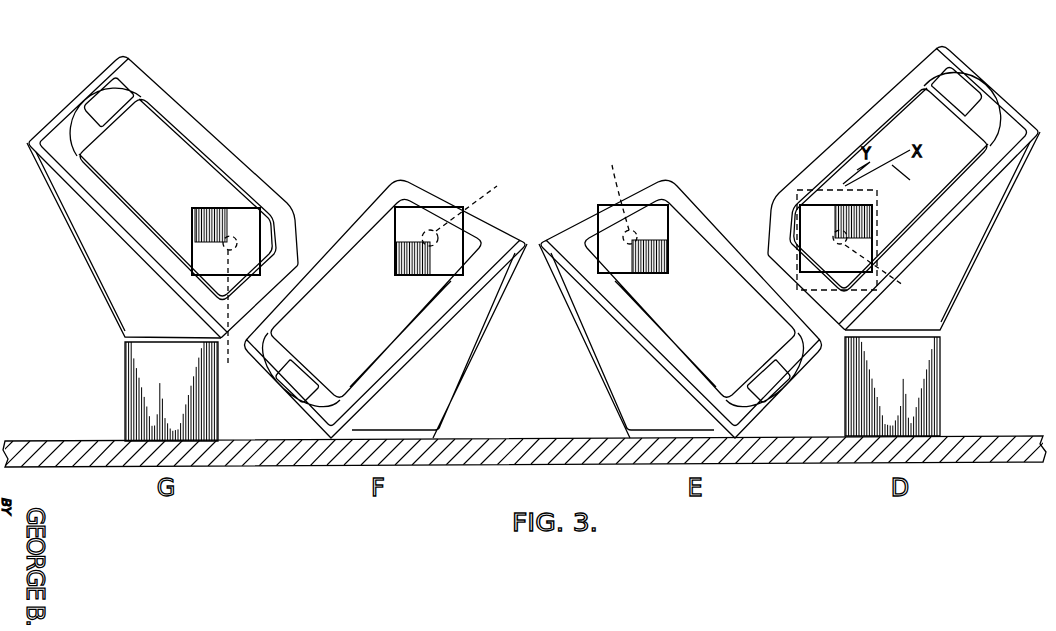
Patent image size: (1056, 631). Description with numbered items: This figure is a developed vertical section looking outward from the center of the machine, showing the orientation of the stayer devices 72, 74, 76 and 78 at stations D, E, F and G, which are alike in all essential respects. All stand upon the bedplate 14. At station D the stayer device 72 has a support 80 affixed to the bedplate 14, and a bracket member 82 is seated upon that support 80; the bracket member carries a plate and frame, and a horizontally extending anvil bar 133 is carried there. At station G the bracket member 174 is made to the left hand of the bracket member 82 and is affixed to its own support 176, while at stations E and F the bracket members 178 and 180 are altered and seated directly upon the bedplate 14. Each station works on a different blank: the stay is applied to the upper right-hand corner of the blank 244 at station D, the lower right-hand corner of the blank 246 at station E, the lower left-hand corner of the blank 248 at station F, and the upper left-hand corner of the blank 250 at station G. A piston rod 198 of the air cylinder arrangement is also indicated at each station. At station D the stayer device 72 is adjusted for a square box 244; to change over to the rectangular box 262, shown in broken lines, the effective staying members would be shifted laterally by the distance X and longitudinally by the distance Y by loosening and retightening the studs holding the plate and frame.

The bedplate 14 is at (567, 440).
The stayer device 72 is at (855, 112).
The stayer device 74 is at (700, 190).
The stayer device 76 is at (366, 188).
The stayer device 78 is at (199, 111).
The support 80 is at (933, 370).
The bracket member 82 is at (1002, 202).
The anvil bar 133 is at (198, 220).
The bracket member 174 is at (103, 278).
The support 176 is at (137, 389).
The bracket member 178 is at (592, 331).
The bracket member 180 is at (440, 410).
The piston rod 198 is at (579, 265).
The blank 244 is at (797, 215).
The blank 246 is at (645, 205).
The blank 248 is at (415, 207).
The blank 250 is at (192, 255).
The rectangular box 262 is at (812, 195).